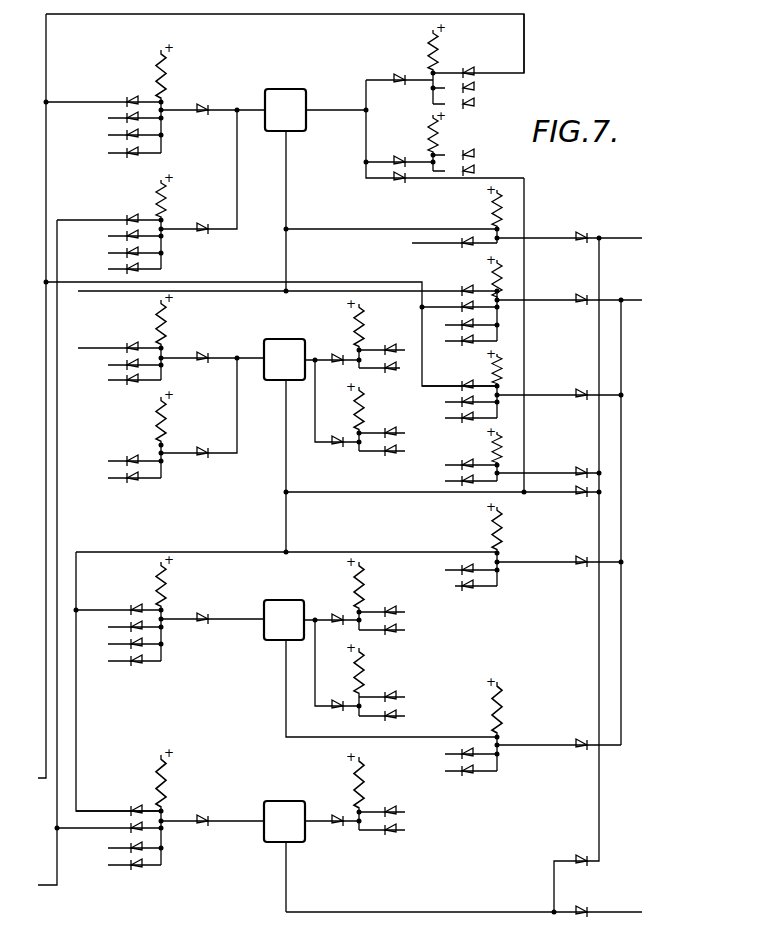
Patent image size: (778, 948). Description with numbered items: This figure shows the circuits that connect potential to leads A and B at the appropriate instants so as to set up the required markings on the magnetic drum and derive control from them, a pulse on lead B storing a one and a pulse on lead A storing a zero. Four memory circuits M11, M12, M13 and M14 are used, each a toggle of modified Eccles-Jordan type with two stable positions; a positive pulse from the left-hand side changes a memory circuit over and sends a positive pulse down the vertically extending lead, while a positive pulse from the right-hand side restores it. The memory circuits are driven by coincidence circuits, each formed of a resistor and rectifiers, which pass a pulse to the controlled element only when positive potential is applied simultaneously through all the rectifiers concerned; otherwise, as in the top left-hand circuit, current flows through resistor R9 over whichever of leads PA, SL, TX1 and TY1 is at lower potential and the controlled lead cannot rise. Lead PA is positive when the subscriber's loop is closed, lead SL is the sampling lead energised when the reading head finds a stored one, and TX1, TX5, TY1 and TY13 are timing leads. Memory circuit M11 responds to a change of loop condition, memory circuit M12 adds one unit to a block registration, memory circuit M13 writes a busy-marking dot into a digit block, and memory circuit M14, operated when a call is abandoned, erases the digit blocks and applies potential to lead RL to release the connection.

The memory circuit M11 is at (285, 110).
The memory circuit M12 is at (284, 359).
The memory circuit M13 is at (284, 620).
The memory circuit M14 is at (284, 821).
The resistor R9 is at (173, 76).
The lead A is at (569, 231).
The lead B is at (569, 293).
The lead RL is at (464, 905).
The lead PA is at (446, 309).
The sampling lead SL is at (441, 762).
The lead TX1 is at (104, 455).
The lead TY1 is at (294, 485).
The lead TX5 is at (446, 581).
The lead TY13 is at (440, 443).